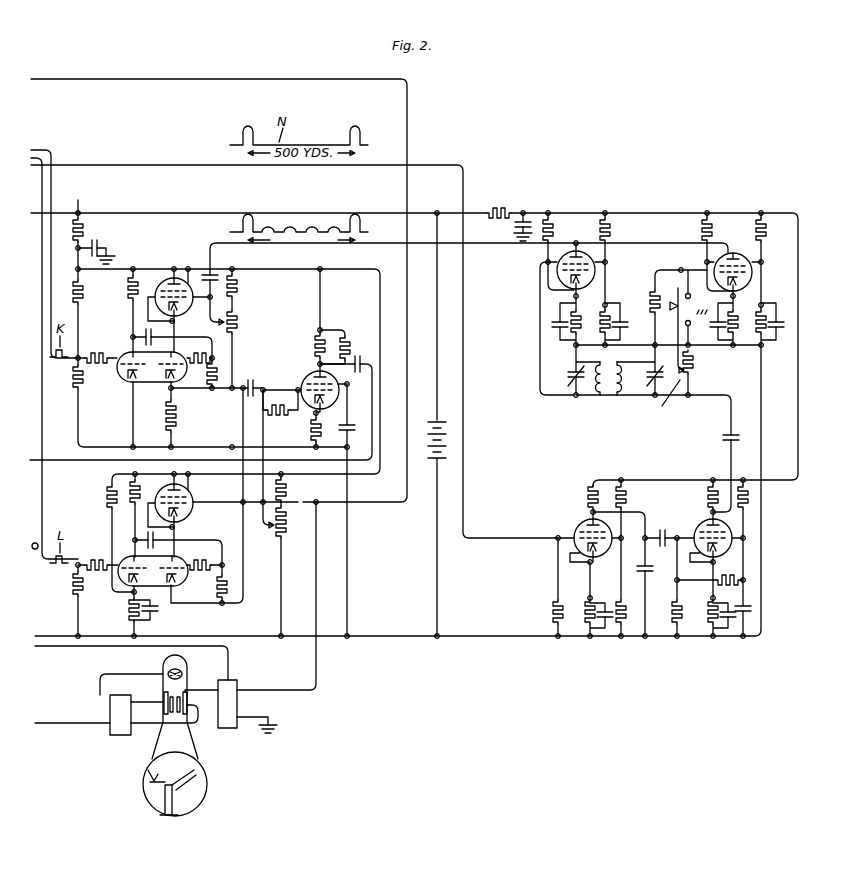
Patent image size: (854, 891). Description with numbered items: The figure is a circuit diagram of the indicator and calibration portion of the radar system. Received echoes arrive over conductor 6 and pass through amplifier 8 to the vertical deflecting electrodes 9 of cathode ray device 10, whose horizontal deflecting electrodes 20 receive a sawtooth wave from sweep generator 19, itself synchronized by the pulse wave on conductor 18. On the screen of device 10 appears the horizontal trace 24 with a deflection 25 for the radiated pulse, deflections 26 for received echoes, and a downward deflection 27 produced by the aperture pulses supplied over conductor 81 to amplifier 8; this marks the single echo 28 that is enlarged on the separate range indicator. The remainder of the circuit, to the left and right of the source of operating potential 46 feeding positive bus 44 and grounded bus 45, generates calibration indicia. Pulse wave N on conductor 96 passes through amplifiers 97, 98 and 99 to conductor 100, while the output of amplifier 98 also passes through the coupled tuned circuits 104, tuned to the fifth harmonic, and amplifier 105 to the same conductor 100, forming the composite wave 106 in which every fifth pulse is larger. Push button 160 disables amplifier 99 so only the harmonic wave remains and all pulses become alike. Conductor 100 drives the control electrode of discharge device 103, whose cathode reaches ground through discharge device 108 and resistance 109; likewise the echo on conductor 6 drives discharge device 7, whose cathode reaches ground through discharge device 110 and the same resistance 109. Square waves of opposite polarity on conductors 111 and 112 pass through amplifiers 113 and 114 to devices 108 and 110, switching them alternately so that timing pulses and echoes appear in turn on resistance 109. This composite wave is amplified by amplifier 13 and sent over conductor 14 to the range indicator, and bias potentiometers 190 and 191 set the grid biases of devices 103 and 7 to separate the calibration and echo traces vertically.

The conductor 6 is at (84, 78).
The conductor 111 is at (47, 147).
The conductor 96 is at (92, 164).
The conductor 112 is at (42, 178).
The positive bus 44 is at (33, 216).
The composite pulse wave 106 is at (239, 230).
The conductor 100 is at (390, 243).
The discharge device 103 is at (168, 290).
The bias potentiometer 190 is at (237, 320).
The amplifier 113 is at (131, 355).
The discharge device 108 is at (196, 349).
The amplifier 13 is at (306, 372).
The resistance 109 is at (178, 415).
The source of operating potential 46 is at (436, 418).
The conductor 14 is at (41, 459).
The discharge device 7 is at (187, 512).
The amplifier 114 is at (135, 558).
The discharge device 110 is at (190, 561).
The bias potentiometer 191 is at (287, 534).
The grounded bus 45 is at (47, 635).
The conductor 81 is at (55, 647).
The conductor 18 is at (49, 722).
The sweep generator 19 is at (112, 745).
The horizontal deflecting electrodes 20 is at (166, 695).
The vertical deflecting electrodes 9 is at (166, 710).
The amplifier 8 is at (237, 701).
The cathode ray device 10 is at (206, 790).
The echo indication 28 is at (148, 771).
The deflection 25 is at (150, 782).
The horizontal trace 24 is at (165, 798).
The downward deflection 27 is at (169, 815).
The deflections 26 is at (197, 770).
The amplifier 105 is at (590, 286).
The coupled tuned circuits 104 is at (602, 368).
The push button 160 is at (670, 315).
The amplifier 99 is at (744, 257).
The amplifier 97 is at (578, 522).
The amplifier 98 is at (700, 522).